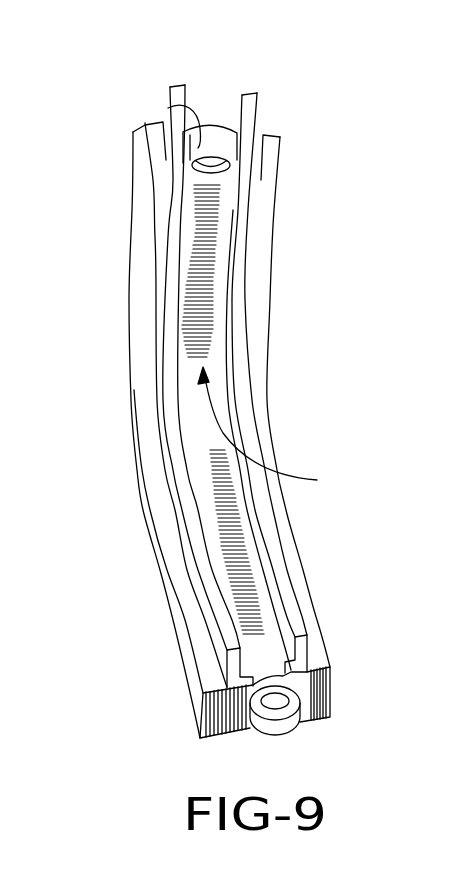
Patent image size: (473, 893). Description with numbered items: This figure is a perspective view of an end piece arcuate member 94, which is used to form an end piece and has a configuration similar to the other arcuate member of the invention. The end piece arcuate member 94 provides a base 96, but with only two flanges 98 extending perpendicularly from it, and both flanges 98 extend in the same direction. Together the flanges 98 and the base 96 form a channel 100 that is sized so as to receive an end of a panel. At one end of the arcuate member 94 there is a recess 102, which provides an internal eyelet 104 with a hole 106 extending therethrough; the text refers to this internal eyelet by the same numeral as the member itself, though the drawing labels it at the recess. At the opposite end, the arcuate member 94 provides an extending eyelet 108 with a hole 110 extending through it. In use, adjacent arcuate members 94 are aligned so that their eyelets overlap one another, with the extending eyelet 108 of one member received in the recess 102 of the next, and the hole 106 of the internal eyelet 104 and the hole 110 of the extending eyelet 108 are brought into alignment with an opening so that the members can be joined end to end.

The end piece arcuate member 94 is at (292, 121).
The base 96 is at (200, 247).
The flanges 98 is at (237, 313).
The channel 100 is at (280, 431).
The recess 102 is at (168, 108).
The connector hole 104 is at (214, 150).
The hole 106 is at (208, 168).
The extending eyelet 108 is at (293, 730).
The hole 110 is at (277, 703).